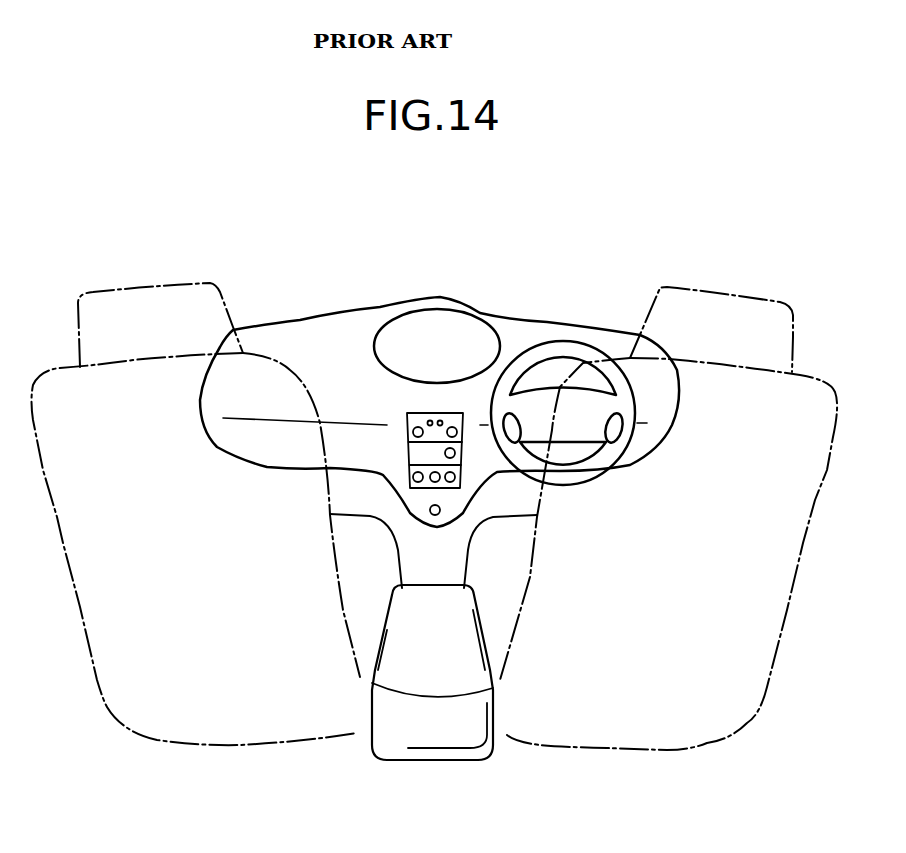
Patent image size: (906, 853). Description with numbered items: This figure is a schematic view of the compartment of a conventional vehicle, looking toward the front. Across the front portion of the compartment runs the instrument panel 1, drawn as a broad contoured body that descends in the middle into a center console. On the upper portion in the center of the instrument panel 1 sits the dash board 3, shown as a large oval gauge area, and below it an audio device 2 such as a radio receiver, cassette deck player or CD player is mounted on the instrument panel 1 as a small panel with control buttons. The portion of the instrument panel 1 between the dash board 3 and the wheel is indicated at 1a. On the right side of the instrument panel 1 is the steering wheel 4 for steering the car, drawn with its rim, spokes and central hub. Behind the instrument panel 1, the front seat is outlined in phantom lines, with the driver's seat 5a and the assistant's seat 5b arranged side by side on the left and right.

The instrument panel 1 is at (543, 330).
The center portion of instrument panel 1a is at (468, 417).
The audio device 2 is at (400, 450).
The dash board 3 is at (438, 327).
The steering wheel 4 is at (597, 347).
The driver's seat 5a is at (803, 377).
The assistant's seat 5b is at (58, 368).